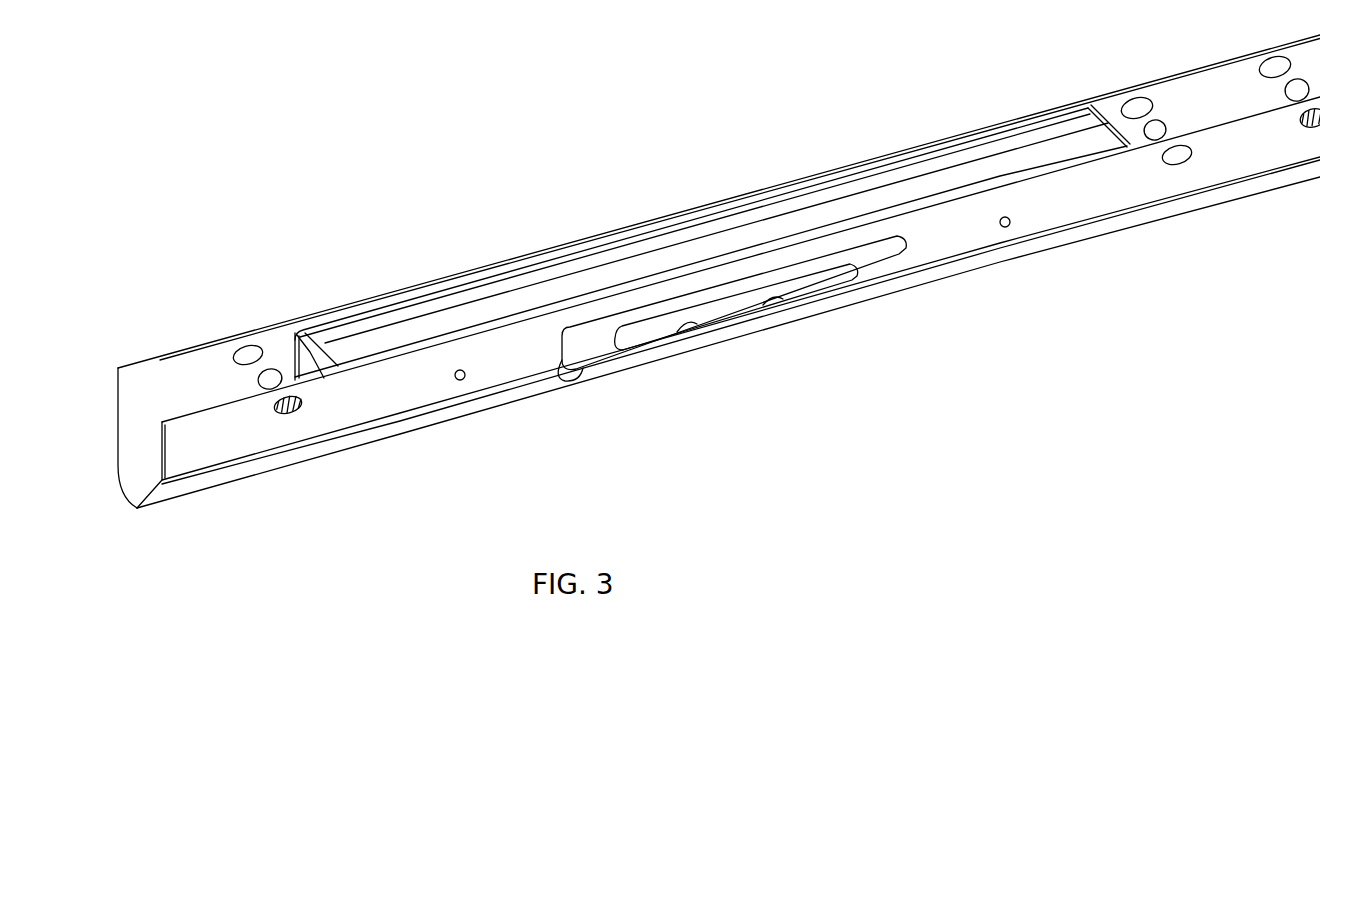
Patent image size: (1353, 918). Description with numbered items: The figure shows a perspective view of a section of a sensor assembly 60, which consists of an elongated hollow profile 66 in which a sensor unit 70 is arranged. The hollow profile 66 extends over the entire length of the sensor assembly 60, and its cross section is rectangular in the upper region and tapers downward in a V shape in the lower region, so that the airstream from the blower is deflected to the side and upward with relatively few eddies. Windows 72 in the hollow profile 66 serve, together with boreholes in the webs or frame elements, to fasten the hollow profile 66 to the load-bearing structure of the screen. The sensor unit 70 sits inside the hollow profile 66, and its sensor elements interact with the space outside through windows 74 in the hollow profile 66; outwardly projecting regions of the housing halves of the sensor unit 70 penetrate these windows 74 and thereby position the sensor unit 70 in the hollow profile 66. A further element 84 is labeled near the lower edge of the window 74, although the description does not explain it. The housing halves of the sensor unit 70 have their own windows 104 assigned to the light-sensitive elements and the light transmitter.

The sensor assembly 60 is at (1056, 328).
The hollow profile 66 is at (1122, 210).
The sensor unit 70 is at (917, 193).
The window 72 is at (1180, 158).
The window 74 is at (880, 270).
The stop tab 84 is at (590, 382).
The window 104 is at (750, 300).